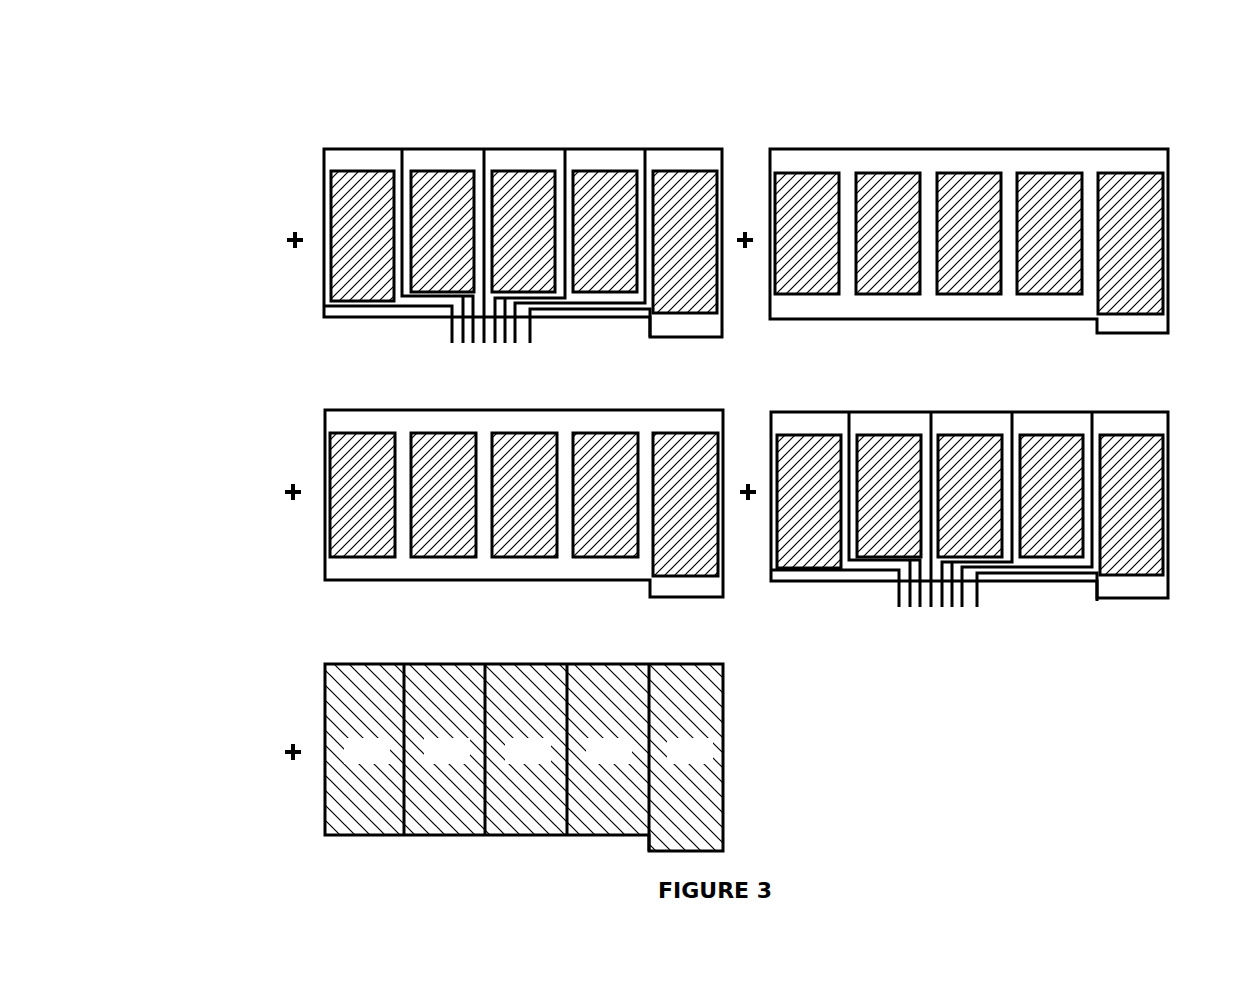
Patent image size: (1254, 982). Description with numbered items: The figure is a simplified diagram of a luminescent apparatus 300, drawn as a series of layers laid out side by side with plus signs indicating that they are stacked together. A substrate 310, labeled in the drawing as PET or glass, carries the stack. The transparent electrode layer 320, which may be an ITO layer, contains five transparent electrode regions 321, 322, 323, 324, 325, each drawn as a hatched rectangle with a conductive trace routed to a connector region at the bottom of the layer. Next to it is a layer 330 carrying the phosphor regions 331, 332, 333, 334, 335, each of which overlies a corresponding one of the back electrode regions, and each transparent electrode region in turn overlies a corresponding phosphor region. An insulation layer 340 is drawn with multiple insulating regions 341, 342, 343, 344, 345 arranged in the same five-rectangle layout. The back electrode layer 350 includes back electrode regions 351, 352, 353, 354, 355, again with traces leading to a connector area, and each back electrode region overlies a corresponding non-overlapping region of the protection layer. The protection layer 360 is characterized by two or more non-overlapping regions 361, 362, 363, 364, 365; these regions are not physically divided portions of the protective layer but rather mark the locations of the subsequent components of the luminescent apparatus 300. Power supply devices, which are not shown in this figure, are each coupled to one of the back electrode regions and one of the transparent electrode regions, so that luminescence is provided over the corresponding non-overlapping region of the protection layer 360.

The luminescent apparatus 300 is at (1123, 80).
The PET (or glass) substrate 310 is at (231, 212).
The transparent electrode layer 320 is at (698, 155).
The transparent electrode region 321 is at (367, 183).
The transparent electrode region 322 is at (447, 182).
The transparent electrode region 323 is at (530, 182).
The transparent electrode region 324 is at (610, 182).
The transparent electrode region 325 is at (685, 182).
The intermediate layer 330 is at (903, 157).
The phosphor region 331 is at (797, 290).
The phosphor region 332 is at (880, 290).
The phosphor region 333 is at (962, 290).
The phosphor region 334 is at (1037, 290).
The phosphor region 335 is at (1143, 283).
The insulating layer 340 is at (528, 420).
The insulating region 341 is at (348, 548).
The insulating region 342 is at (432, 548).
The insulating region 343 is at (513, 548).
The insulating region 344 is at (590, 548).
The insulating region 345 is at (693, 568).
The back electrode layer 350 is at (1150, 420).
The back electrode region 351 is at (813, 447).
The back electrode region 352 is at (893, 447).
The back electrode region 353 is at (977, 447).
The back electrode region 354 is at (1057, 447).
The back electrode region 355 is at (1133, 447).
The protection layer 360 is at (525, 675).
The non-overlapping region 361 is at (388, 762).
The non-overlapping region 362 is at (468, 762).
The non-overlapping region 363 is at (549, 762).
The non-overlapping region 364 is at (630, 762).
The non-overlapping region 365 is at (711, 762).